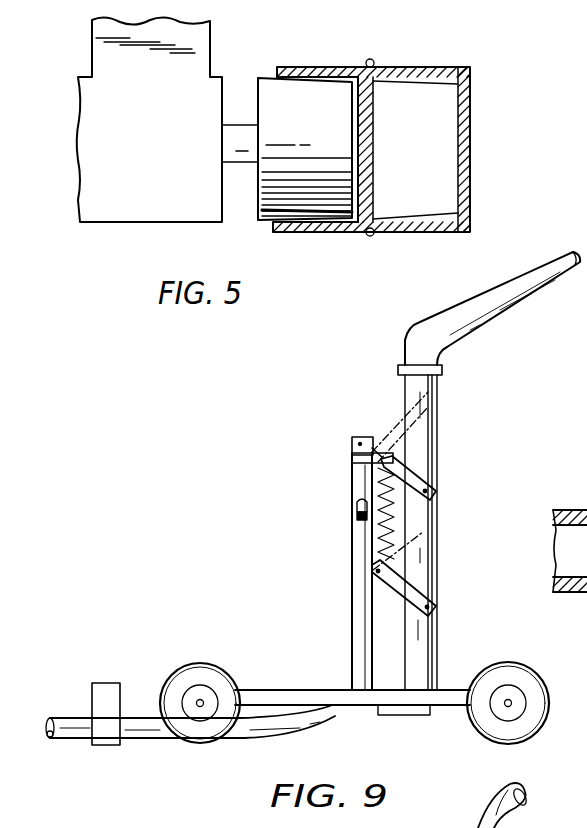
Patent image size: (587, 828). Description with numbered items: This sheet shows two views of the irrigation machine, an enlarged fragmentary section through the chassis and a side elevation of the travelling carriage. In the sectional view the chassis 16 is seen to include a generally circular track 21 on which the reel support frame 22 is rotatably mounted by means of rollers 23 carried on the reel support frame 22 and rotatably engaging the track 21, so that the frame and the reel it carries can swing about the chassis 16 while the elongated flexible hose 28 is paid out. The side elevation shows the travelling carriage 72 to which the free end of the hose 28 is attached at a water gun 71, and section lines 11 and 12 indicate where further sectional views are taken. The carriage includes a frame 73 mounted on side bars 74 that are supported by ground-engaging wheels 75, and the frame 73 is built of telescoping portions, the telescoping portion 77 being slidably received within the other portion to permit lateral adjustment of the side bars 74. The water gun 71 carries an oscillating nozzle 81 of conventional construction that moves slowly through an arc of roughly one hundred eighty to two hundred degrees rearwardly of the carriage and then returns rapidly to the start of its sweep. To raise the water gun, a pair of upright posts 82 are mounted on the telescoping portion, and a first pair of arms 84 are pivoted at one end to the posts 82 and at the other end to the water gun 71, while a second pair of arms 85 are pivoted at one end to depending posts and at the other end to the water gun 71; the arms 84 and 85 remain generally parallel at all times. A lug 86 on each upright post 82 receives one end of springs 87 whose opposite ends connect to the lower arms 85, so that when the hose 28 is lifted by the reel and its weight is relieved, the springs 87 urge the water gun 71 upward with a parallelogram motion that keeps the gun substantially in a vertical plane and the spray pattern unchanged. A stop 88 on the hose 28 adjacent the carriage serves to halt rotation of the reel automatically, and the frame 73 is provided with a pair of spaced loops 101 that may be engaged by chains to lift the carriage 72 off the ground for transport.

In FIG. 5, the chassis 16 is at (468, 184).
In FIG. 5, the circular track 21 is at (328, 222).
In FIG. 5, the reel support frame 22 is at (122, 213).
In FIG. 5, the rollers 23 is at (262, 96).
In FIG. 9, the section line 11 is at (360, 480).
In FIG. 9, the section line 12 is at (108, 795).
In FIG. 9, the flexible hose 28 is at (146, 738).
In FIG. 9, the water gun 71 is at (430, 557).
In FIG. 9, the travelling carriage 72 is at (348, 657).
In FIG. 9, the frame 73 is at (358, 594).
In FIG. 9, the side bars 74 is at (447, 698).
In FIG. 9, the ground-engaging wheels 75 is at (200, 662).
In FIG. 9, the telescoping portion 77 is at (575, 510).
In FIG. 9, the oscillating nozzle 81 is at (508, 304).
In FIG. 9, the upright posts 82 is at (352, 447).
In FIG. 9, the first pair of arms 84 is at (436, 462).
In FIG. 9, the second pair of arms 85 is at (396, 598).
In FIG. 9, the lug 86 is at (372, 463).
In FIG. 9, the springs 87 is at (438, 504).
In FIG. 9, the stop 88 is at (116, 692).
In FIG. 9, the spaced loops 101 is at (355, 508).